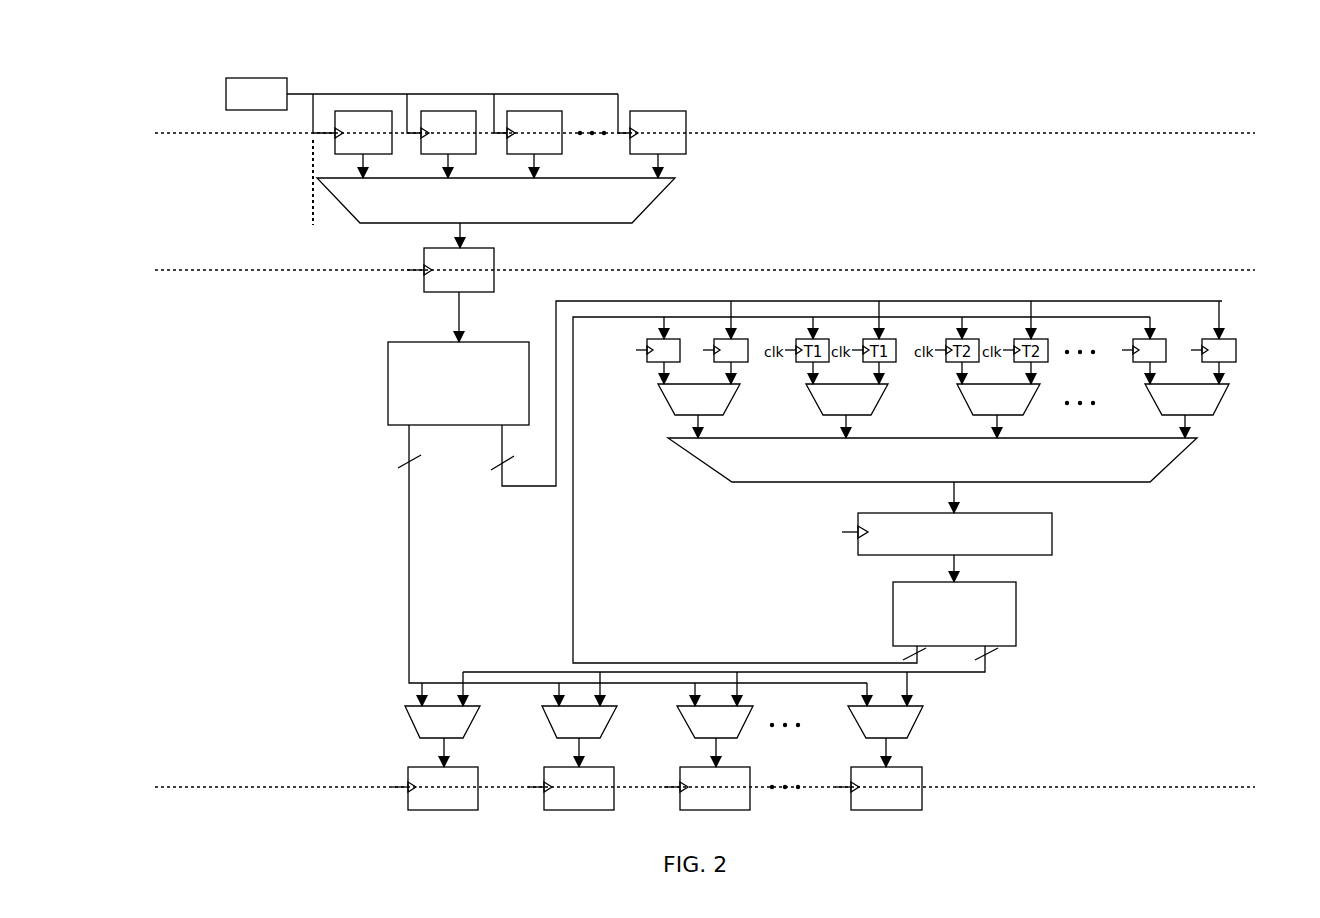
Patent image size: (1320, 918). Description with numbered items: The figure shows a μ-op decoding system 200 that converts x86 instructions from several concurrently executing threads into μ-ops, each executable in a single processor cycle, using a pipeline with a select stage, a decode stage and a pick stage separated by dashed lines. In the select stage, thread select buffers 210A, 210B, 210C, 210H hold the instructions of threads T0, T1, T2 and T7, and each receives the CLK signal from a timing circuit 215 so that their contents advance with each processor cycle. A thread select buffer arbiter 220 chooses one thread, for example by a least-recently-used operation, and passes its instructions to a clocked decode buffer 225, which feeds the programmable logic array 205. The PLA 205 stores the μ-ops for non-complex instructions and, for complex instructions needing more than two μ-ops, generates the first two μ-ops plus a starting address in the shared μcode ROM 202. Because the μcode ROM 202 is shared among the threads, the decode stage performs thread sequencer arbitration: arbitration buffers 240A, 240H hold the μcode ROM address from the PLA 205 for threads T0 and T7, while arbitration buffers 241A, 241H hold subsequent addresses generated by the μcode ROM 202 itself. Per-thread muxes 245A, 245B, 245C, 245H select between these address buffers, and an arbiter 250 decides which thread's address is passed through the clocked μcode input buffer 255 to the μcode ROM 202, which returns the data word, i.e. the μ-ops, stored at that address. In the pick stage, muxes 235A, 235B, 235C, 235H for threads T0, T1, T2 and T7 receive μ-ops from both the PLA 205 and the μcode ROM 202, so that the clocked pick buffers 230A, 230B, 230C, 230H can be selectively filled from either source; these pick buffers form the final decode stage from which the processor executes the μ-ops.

The μ-op decoding system 200 is at (872, 106).
The timing circuit 215 is at (432, 107).
The thread select buffer 210A is at (338, 154).
The thread select buffer 210B is at (444, 154).
The thread select buffer 210C is at (530, 154).
The thread select buffer 210H is at (654, 154).
The thread select buffer arbiter 220 is at (403, 225).
The decode buffer 225 is at (441, 293).
The programmable logic array 205 is at (406, 427).
The arbitration buffer 241A is at (657, 338).
The arbitration buffer 240A is at (742, 338).
The arbitration buffer 241H is at (1142, 338).
The arbitration buffer 240H is at (1230, 338).
The mux 245A is at (706, 418).
The mux 245B is at (854, 418).
The mux 245C is at (1005, 418).
The mux 245H is at (1193, 418).
The arbiter 250 is at (836, 484).
The μcode input buffer 255 is at (877, 557).
The μcode ROM 202 is at (1004, 648).
The mux 235A is at (430, 740).
The mux 235B is at (567, 740).
The mux 235C is at (705, 740).
The mux 235H is at (875, 740).
The pick buffer 230A is at (428, 812).
The pick buffer 230B is at (571, 812).
The pick buffer 230C is at (705, 812).
The pick buffer 230H is at (874, 812).